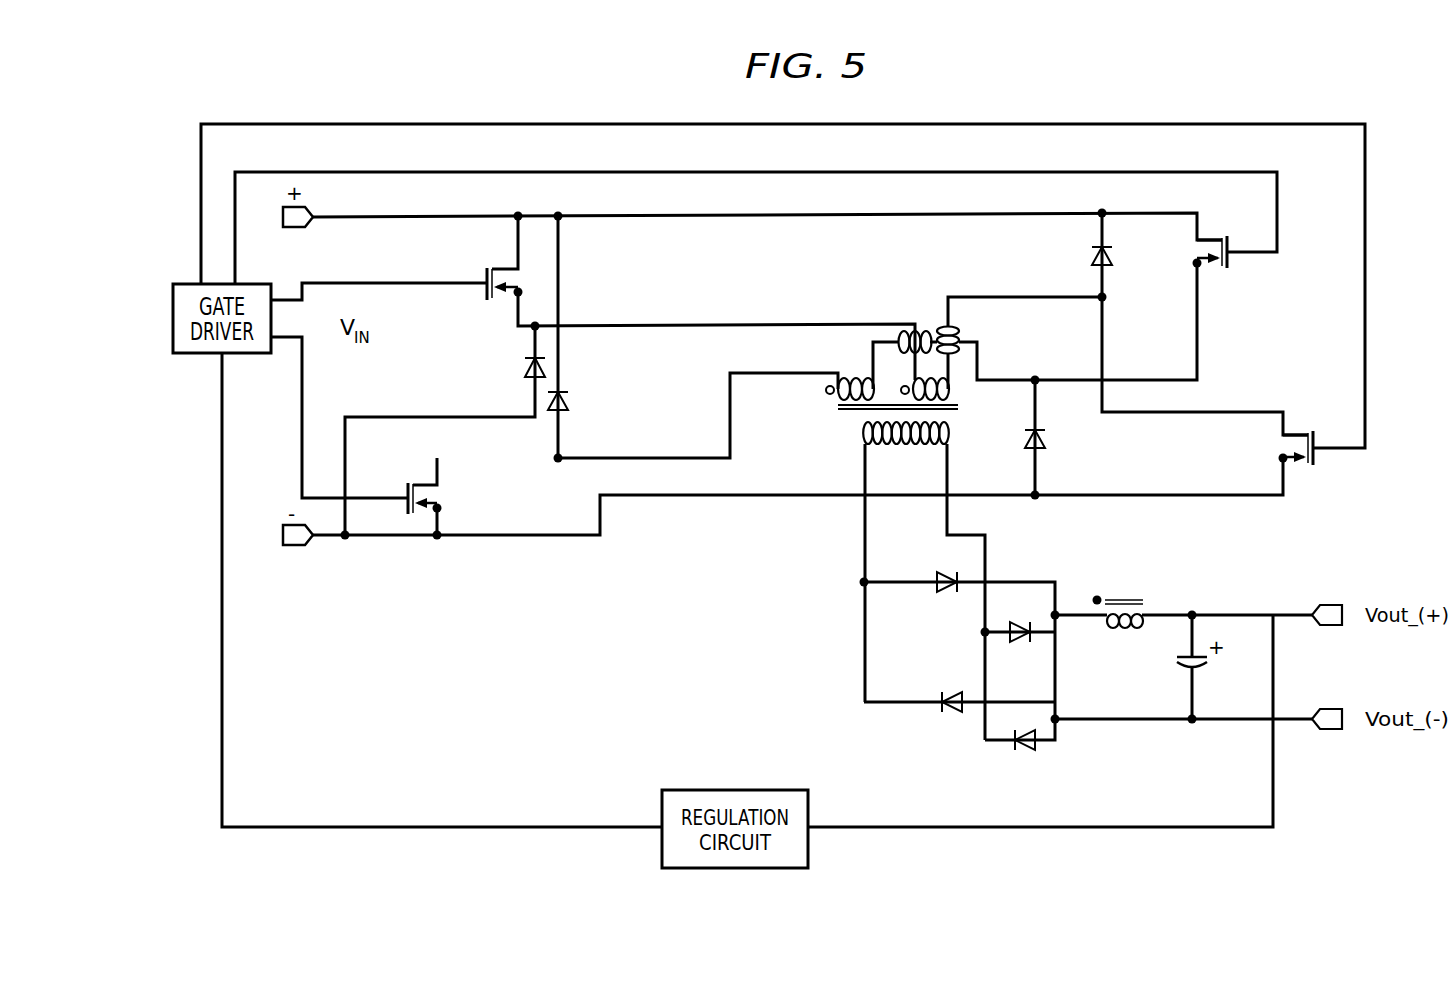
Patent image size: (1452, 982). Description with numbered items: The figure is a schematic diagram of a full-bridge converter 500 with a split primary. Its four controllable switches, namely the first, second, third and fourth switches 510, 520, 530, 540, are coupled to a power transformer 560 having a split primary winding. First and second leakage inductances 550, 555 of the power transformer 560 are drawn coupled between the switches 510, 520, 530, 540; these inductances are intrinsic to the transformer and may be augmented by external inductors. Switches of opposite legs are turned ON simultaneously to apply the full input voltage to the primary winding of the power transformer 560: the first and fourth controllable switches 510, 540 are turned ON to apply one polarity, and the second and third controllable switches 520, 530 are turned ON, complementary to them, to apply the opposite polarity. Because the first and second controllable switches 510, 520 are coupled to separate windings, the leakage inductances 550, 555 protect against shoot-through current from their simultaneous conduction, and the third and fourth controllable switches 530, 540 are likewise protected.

The full-bridge converter 500 is at (1288, 90).
The first controllable switch 510 is at (487, 267).
The second controllable switch 520 is at (408, 483).
The third controllable switch 530 is at (1244, 228).
The fourth controllable switch 540 is at (1314, 434).
The first leakage inductance 550 is at (902, 331).
The second leakage inductance 555 is at (958, 331).
The power transformer 560 is at (848, 411).